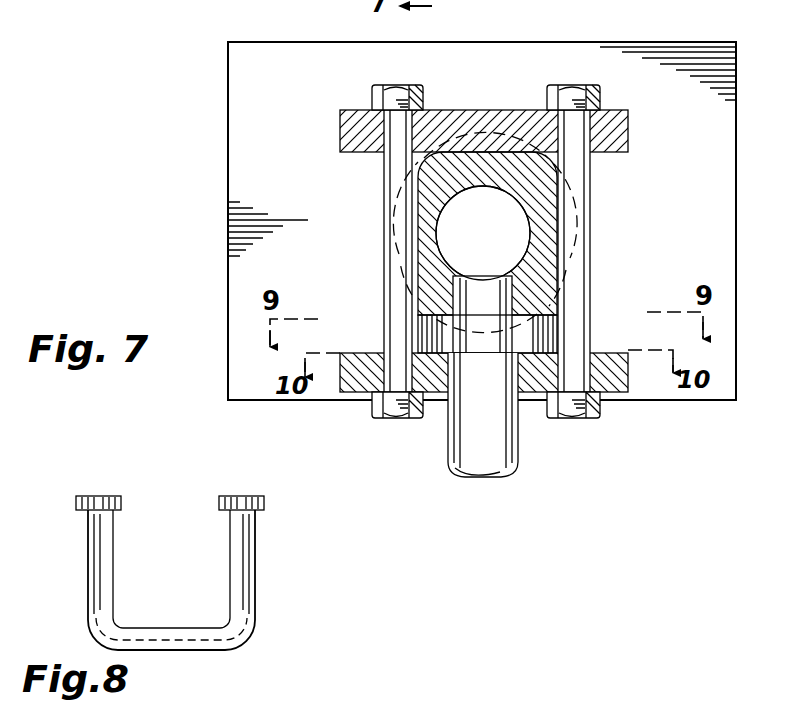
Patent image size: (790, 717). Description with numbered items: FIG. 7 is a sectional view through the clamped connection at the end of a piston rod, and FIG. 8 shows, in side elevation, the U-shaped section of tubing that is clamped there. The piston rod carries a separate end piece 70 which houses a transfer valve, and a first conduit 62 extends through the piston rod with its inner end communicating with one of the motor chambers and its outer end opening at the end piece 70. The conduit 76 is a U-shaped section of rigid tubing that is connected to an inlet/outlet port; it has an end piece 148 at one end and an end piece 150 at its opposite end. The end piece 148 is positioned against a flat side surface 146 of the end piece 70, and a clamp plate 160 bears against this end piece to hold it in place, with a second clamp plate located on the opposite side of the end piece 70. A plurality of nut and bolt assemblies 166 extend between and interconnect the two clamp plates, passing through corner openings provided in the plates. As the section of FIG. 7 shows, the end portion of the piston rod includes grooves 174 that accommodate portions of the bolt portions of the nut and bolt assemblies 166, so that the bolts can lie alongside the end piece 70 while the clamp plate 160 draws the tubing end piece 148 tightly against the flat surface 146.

In FIG. 7, the nut and bolt assemblies 166 is at (403, 60).
In FIG. 7, the end piece 70 is at (535, 178).
In FIG. 7, the grooves 174 is at (418, 192).
In FIG. 7, the first conduit 62 is at (512, 243).
In FIG. 7, the flat side surface 146 is at (548, 328).
In FIG. 7, the clamp plate 160 is at (366, 382).
In FIG. 7, the conduit 76 is at (502, 443).
In FIG. 8, the conduit 76 is at (240, 592).
In FIG. 8, the end piece 148 is at (95, 494).
In FIG. 8, the end piece 150 is at (240, 494).